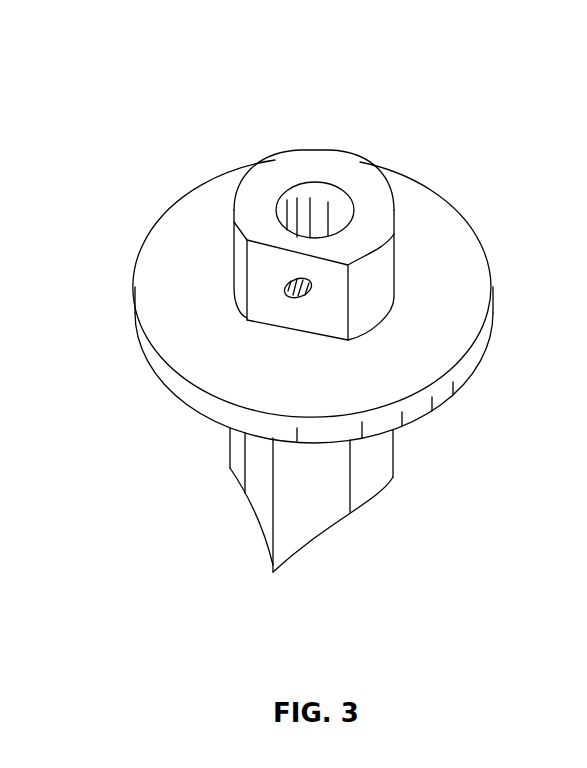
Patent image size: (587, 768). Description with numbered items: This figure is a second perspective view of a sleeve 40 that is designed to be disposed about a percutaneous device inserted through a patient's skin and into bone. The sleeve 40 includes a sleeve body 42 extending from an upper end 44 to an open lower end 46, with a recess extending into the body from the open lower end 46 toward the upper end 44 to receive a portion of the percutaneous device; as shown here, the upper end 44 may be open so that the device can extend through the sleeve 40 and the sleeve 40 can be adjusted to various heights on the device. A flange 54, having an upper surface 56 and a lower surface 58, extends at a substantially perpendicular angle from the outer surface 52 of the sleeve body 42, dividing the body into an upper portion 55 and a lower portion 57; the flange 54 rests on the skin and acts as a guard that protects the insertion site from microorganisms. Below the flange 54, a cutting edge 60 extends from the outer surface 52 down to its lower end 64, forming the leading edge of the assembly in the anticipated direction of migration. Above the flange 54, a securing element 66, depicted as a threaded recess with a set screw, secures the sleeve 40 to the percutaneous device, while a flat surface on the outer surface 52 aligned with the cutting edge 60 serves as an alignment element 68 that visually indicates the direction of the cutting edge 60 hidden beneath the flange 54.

The sleeve 40 is at (424, 58).
The sleeve body 42 is at (402, 451).
The upper end 44 is at (300, 165).
The open lower end 46 is at (370, 500).
The outer surface 52 is at (230, 448).
The flange 54 is at (383, 315).
The upper portion 55 is at (395, 268).
The upper surface 56 is at (422, 218).
The lower portion 57 is at (375, 473).
The lower surface 58 is at (455, 393).
The cutting edge 60 is at (266, 513).
The lower end 64 is at (273, 572).
The securing element 66 is at (298, 297).
The alignment element 68 is at (257, 285).